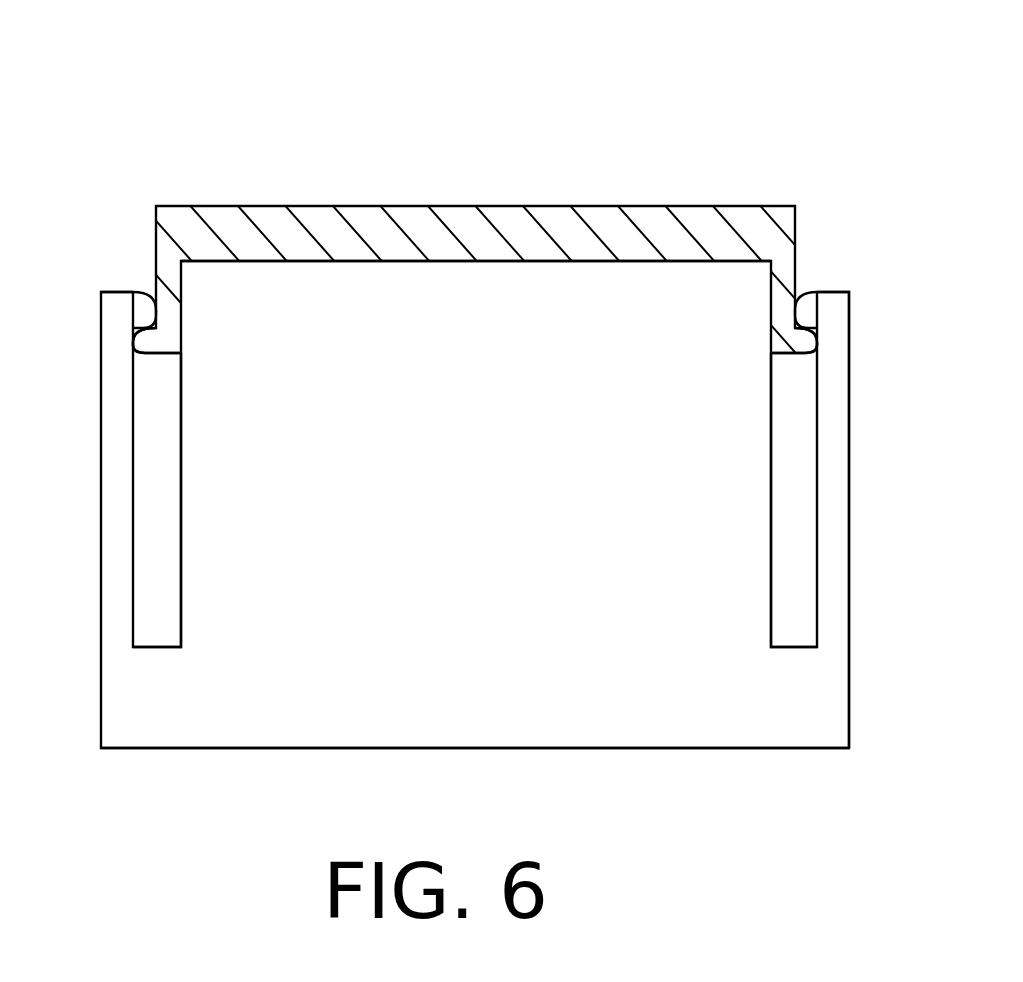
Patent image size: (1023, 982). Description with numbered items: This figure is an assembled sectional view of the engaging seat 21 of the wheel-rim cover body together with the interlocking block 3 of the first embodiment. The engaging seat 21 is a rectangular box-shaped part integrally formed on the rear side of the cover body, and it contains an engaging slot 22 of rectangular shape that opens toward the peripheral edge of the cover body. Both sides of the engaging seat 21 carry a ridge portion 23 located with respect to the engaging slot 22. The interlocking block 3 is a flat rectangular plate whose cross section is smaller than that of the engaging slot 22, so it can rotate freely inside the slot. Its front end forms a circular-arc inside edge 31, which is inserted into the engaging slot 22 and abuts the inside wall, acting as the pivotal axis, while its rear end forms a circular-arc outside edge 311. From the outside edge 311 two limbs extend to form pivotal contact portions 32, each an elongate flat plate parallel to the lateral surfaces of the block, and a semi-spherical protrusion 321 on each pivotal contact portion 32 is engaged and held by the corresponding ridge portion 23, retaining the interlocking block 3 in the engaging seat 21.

The engaging seat 21 is at (450, 205).
The engaging slot 22 is at (510, 262).
The ridge portion 23 is at (820, 338).
The interlocking block 3 is at (673, 572).
The inside edge 31 is at (693, 261).
The outside edge 311 is at (682, 748).
The pivotal contact portion 32 is at (850, 412).
The semi-spherical protrusion 321 is at (808, 290).